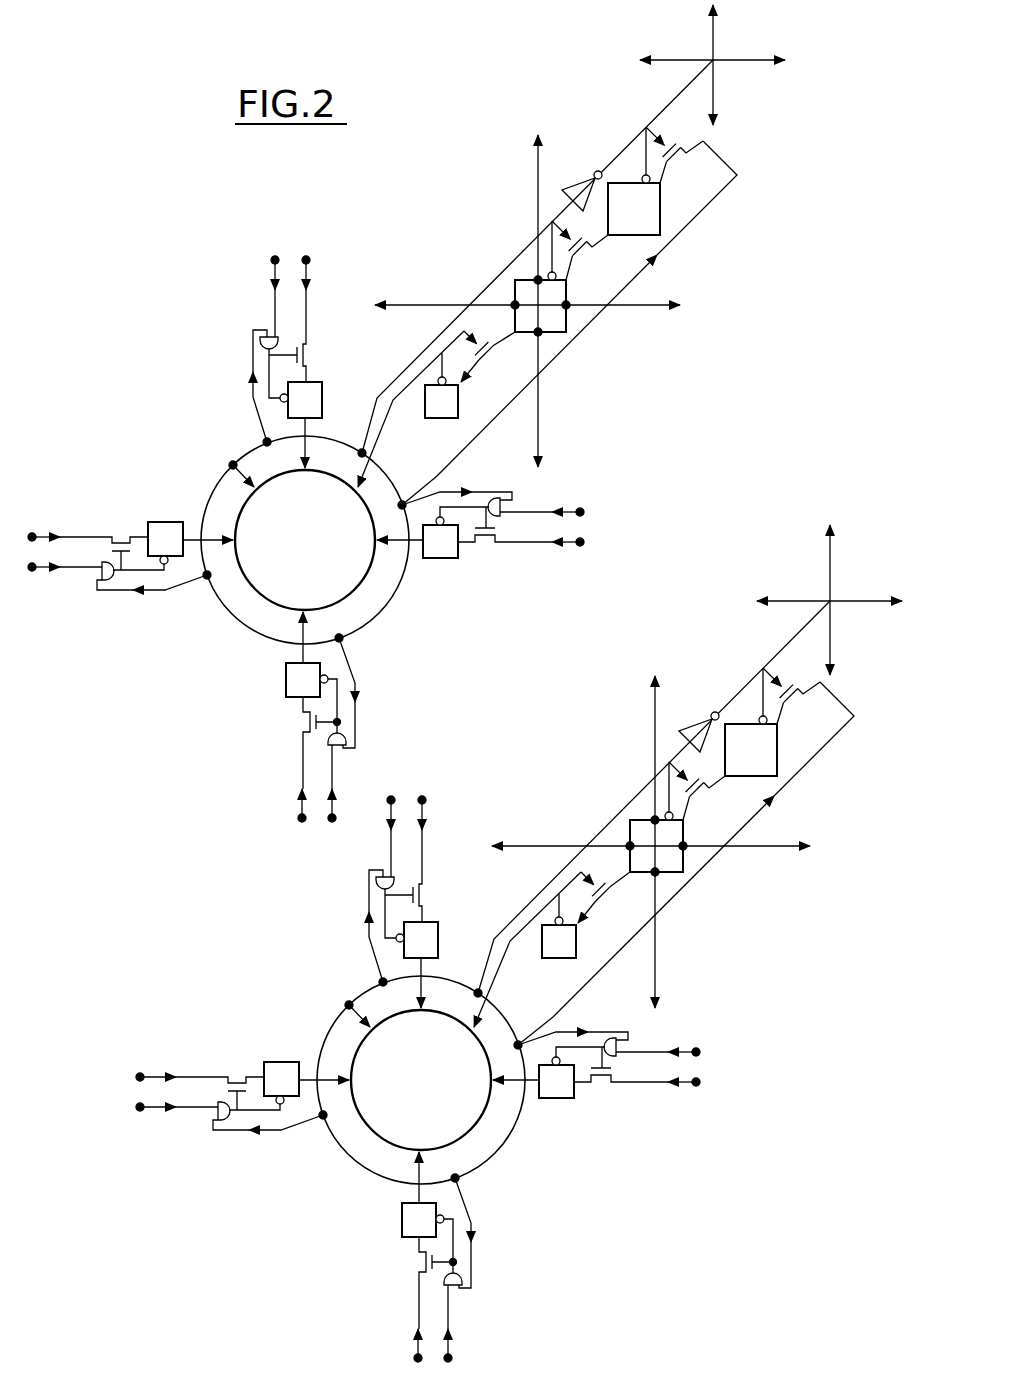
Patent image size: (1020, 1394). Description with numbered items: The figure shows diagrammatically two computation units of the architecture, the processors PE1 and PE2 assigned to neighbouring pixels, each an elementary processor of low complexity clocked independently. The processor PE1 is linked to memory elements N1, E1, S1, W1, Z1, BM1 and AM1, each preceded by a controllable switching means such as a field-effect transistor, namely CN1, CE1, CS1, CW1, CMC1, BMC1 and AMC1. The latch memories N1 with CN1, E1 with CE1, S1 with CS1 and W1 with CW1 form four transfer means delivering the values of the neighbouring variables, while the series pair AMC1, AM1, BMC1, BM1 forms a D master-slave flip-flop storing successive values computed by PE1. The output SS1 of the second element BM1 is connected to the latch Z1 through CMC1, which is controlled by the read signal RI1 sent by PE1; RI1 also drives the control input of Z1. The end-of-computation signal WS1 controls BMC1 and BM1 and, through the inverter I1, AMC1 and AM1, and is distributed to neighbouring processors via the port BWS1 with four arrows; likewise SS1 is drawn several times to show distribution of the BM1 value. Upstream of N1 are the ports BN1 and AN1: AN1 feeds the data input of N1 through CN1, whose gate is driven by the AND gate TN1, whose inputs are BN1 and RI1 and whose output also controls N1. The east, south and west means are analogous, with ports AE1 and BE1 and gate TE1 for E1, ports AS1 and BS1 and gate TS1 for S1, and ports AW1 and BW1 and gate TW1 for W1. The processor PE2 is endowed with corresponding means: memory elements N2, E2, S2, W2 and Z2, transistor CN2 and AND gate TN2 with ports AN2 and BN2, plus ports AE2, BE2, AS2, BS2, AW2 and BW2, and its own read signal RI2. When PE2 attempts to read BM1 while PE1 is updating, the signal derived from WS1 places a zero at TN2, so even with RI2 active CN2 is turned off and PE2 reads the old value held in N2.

The computation unit PE1 is at (305, 540).
The read signal RI1 is at (247, 490).
The memory element N1 is at (301, 425).
The field-effect transistor CN1 is at (300, 356).
The port AN1 is at (306, 256).
The port BN1 is at (275, 256).
The AND logic gate TN1 is at (262, 340).
The memory element W1 is at (173, 546).
The controllable switching means CW1 is at (120, 549).
The port AW1 is at (32, 533).
The AND logic gate TW1 is at (105, 583).
The port BW1 is at (35, 572).
The memory element E1 is at (433, 532).
The controllable switching means CE1 is at (486, 540).
The port AE1 is at (584, 543).
The AND logic gate TE1 is at (497, 500).
The port BE1 is at (584, 512).
The memory element S1 is at (311, 672).
The controllable switching means CS1 is at (302, 722).
The port AS1 is at (300, 824).
The AND logic gate TS1 is at (348, 736).
The port BS1 is at (332, 824).
The port BWS1 is at (716, 58).
The end-of-computation signal WS1 is at (490, 283).
The inverter I1 is at (595, 173).
The memory element AM1 is at (634, 181).
The controllable switching means AMC1 is at (690, 154).
The memory element BM1 is at (540, 301).
The controllable switching means BMC1 is at (596, 250).
The output SS1 is at (550, 274).
The controllable switching means CMC1 is at (492, 352).
The memory element Z1 is at (441, 385).
The computation unit PE2 is at (421, 1080).
The read signal RI2 is at (362, 1030).
The memory element N2 is at (417, 965).
The field-effect transistor CN2 is at (420, 890).
The port AN2 is at (422, 796).
The port BN2 is at (391, 796).
The AND logic gate TN2 is at (378, 885).
The memory element W2 is at (289, 1086).
The port AW2 is at (136, 1077).
The port BW2 is at (136, 1107).
The memory element E2 is at (549, 1072).
The port AE2 is at (700, 1082).
The port BE2 is at (700, 1052).
The memory element S2 is at (427, 1212).
The port AS2 is at (416, 1355).
The port BS2 is at (450, 1355).
The memory element Z2 is at (559, 926).